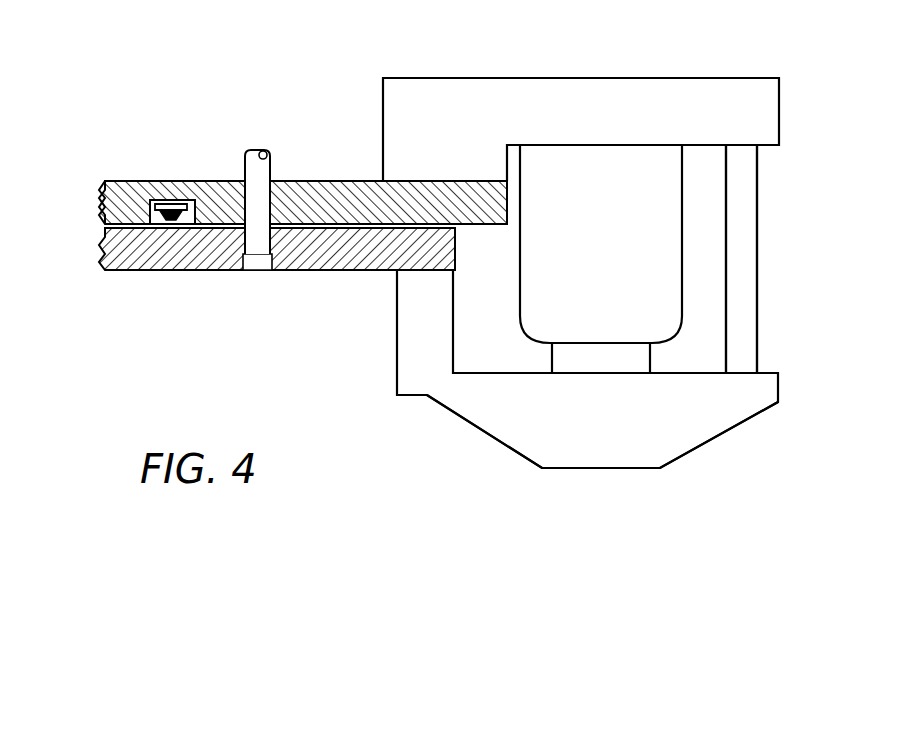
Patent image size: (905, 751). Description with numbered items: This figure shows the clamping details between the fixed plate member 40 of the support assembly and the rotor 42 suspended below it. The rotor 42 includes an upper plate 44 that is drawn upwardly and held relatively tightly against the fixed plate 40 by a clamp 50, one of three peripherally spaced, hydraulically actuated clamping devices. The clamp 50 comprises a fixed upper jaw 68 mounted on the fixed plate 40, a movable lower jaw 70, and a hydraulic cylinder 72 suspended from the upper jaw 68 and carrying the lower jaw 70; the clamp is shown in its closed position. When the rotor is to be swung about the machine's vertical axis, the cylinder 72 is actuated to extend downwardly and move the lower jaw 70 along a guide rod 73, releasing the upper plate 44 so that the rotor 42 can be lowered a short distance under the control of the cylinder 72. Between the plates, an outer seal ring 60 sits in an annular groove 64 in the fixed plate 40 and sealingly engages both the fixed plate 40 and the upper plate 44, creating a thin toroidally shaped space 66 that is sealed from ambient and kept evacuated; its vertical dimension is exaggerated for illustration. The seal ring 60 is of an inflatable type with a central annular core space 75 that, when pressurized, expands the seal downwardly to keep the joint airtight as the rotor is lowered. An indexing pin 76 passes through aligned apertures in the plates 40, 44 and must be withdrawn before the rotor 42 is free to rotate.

The fixed plate member 40 is at (343, 181).
The rotor 42 is at (291, 283).
The upper plate 44 is at (130, 271).
The clamp 50 is at (383, 109).
The outer seal ring 60 is at (165, 228).
The annular groove 64 is at (185, 181).
The toroidally shaped space 66 is at (107, 181).
The fixed upper jaw 68 is at (470, 78).
The movable lower jaw 70 is at (605, 470).
The hydraulic cylinder 72 is at (627, 170).
The guide rod 73 is at (752, 202).
The central annular core space 75 is at (163, 181).
The indexing pin 76 is at (256, 150).